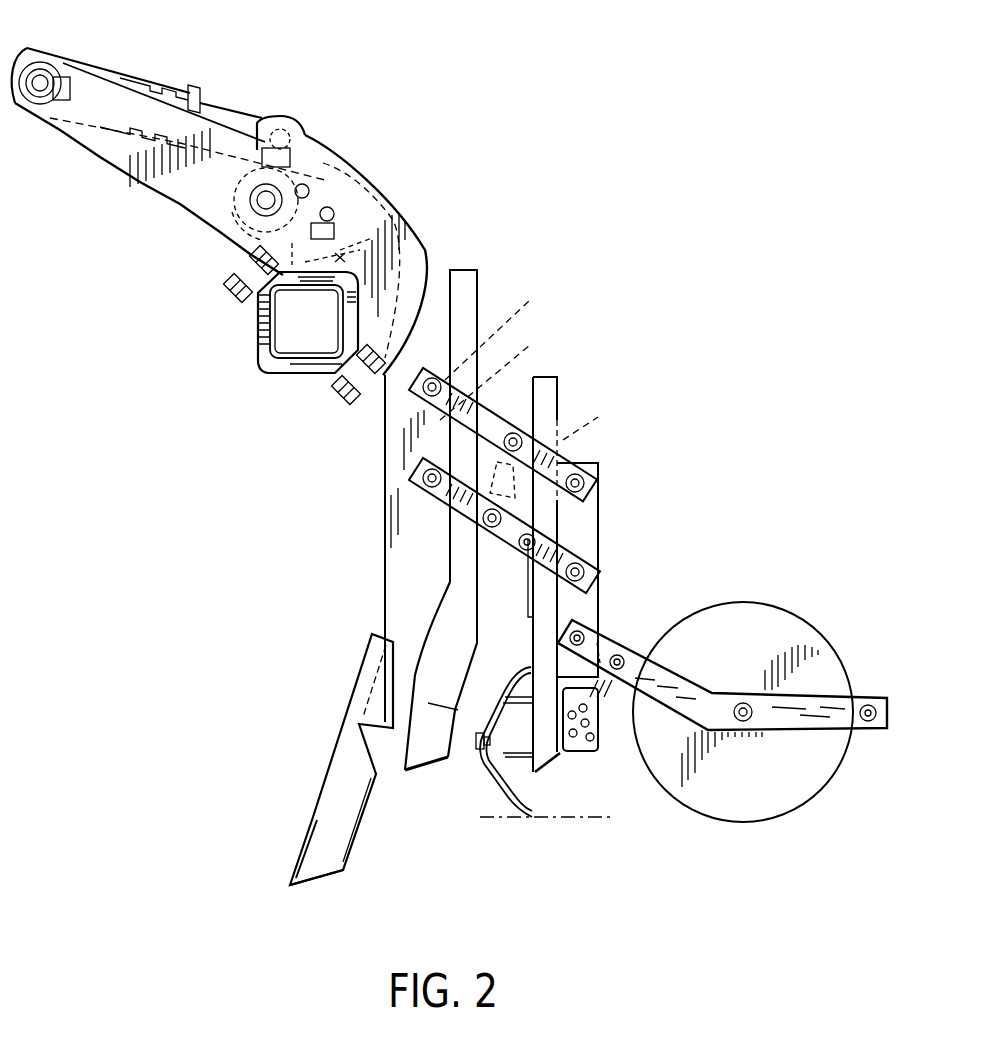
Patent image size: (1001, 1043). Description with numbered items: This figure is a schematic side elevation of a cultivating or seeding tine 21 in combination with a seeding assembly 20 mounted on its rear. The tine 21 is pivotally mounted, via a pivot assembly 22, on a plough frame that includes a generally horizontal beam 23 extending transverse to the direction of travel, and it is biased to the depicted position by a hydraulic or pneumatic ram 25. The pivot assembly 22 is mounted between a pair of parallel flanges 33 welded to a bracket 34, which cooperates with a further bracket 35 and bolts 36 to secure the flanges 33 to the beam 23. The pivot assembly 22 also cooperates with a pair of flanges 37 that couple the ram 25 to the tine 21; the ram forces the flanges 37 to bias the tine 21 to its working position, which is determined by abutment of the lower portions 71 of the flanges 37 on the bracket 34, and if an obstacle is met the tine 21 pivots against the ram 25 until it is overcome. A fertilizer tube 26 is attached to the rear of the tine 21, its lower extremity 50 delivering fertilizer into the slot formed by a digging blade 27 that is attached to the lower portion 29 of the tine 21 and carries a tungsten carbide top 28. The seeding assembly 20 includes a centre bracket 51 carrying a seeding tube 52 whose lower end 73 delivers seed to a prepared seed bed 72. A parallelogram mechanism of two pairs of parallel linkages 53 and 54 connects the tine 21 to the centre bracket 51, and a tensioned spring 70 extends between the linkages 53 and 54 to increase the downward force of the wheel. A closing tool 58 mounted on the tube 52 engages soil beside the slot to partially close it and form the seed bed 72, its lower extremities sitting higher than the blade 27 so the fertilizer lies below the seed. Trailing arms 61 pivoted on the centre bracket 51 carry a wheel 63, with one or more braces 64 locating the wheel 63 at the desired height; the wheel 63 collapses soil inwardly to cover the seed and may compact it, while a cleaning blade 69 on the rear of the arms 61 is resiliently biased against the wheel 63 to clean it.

The seeding assembly 20 is at (640, 249).
The cultivating or seeding tine 21 is at (390, 487).
The pivot assembly 22 is at (372, 168).
The horizontal beam 23 is at (267, 363).
The hydraulic or pneumatic ram 25 is at (150, 68).
The fertilizer tube 26 is at (468, 285).
The digging blade 27 is at (343, 767).
The tungsten carbide top 28 is at (295, 877).
The lower portion 29 is at (384, 717).
The flanges 33 is at (118, 146).
The bracket 34 is at (252, 312).
The further bracket 35 is at (303, 366).
The bolts 36 is at (237, 260).
The flanges 37 is at (317, 150).
The lower extremity 50 is at (430, 747).
The centre bracket 51 is at (583, 530).
The seeding tube 52 is at (555, 400).
The parallel linkages 53 is at (478, 410).
The parallel linkages 54 is at (423, 496).
The closing tool 58 is at (512, 790).
The trailing arms 61 is at (640, 667).
The wheel 63 is at (744, 671).
The braces 64 is at (603, 700).
The cleaning blade 69 is at (860, 730).
The tensioned spring 70 is at (589, 416).
The lower portions 71 is at (402, 232).
The seed bed 72 is at (587, 817).
The lower end 73 is at (557, 757).